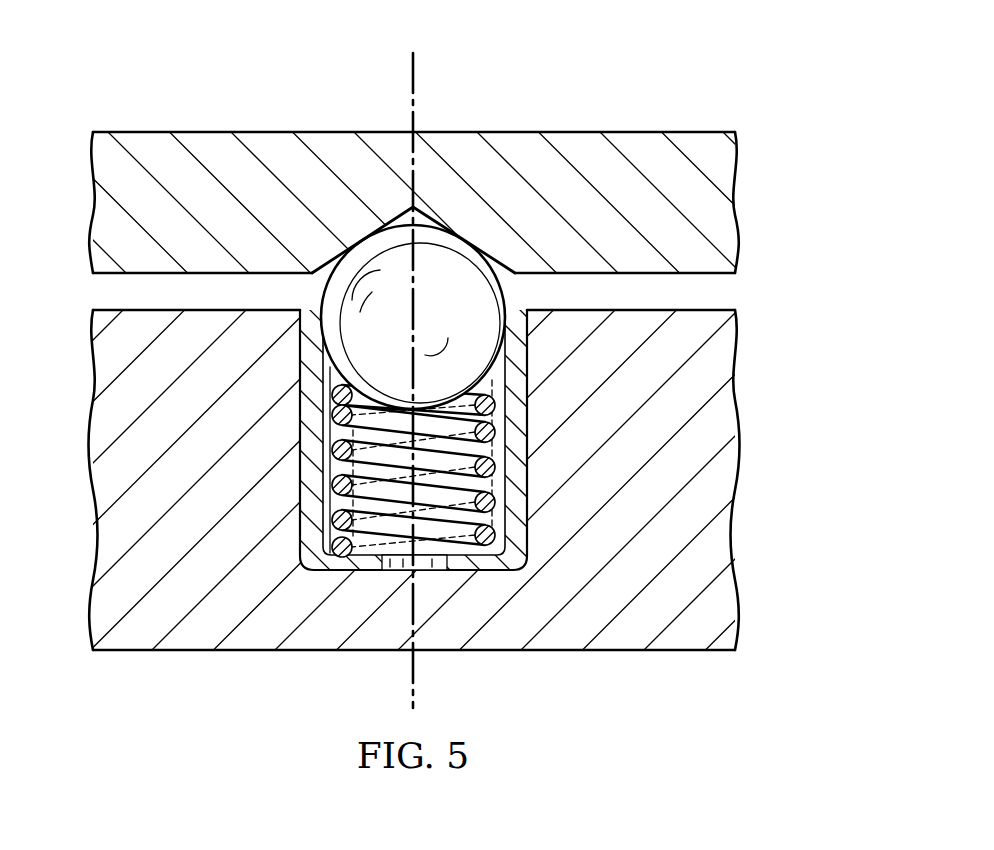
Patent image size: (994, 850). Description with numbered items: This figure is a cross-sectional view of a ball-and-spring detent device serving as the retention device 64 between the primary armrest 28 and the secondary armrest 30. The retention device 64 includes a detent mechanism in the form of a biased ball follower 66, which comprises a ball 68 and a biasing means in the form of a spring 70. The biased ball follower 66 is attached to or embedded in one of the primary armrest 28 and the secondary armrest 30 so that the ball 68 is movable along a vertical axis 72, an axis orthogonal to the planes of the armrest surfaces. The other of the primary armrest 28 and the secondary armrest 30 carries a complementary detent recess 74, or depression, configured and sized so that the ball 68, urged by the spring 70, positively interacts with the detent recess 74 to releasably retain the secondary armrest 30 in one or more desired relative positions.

The primary armrest 28 is at (190, 121).
The secondary armrest 30 is at (175, 670).
The retention device 64 is at (789, 279).
The biased ball follower 66 is at (289, 366).
The ball 68 is at (502, 287).
The spring 70 is at (492, 518).
The vertical axis 72 is at (415, 80).
The detent recess 74 is at (318, 273).